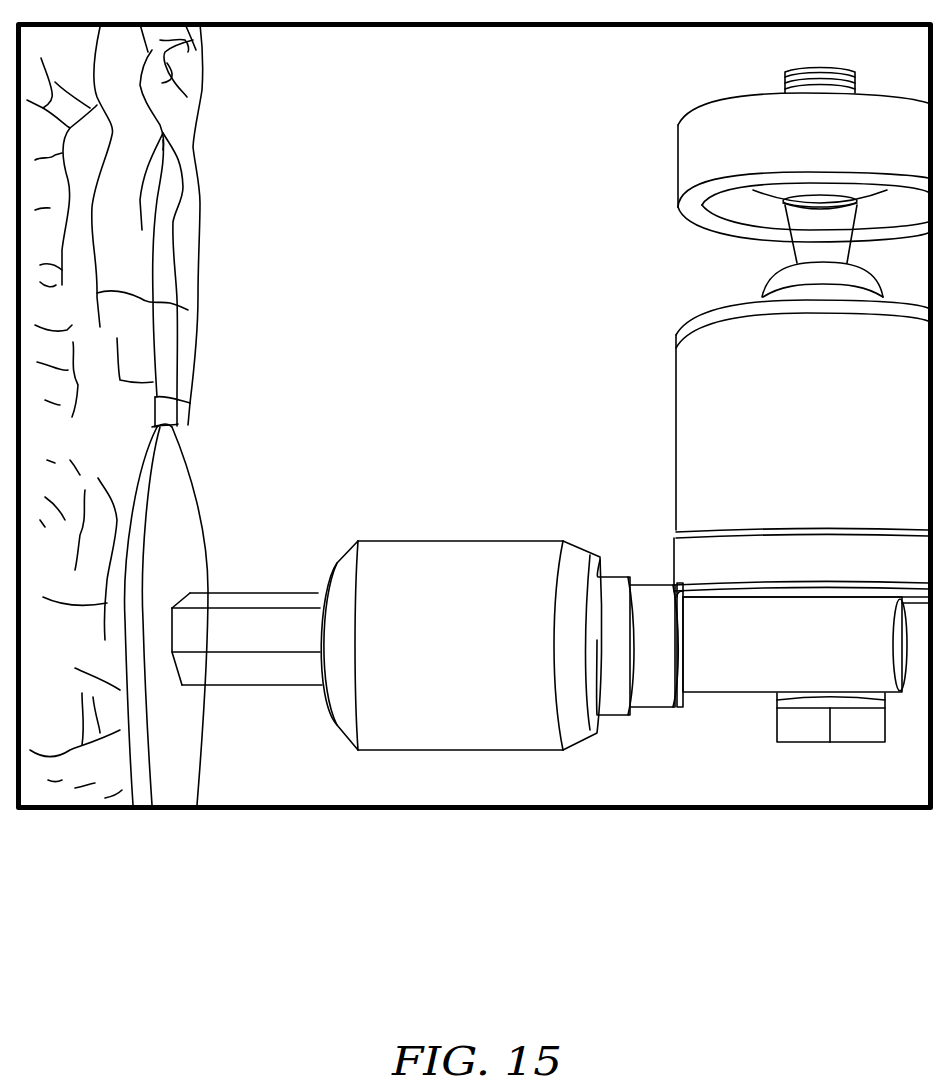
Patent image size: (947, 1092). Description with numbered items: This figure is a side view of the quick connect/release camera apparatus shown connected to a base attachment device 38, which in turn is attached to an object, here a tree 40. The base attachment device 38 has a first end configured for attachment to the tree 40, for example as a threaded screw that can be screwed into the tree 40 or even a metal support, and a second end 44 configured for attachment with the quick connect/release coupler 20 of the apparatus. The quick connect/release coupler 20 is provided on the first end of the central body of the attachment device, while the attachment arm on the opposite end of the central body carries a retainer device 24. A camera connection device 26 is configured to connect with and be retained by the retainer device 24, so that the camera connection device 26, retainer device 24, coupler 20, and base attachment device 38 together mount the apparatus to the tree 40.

The quick connect/release coupler 20 is at (402, 716).
The retainer device 24 is at (727, 681).
The camera connection device 26 is at (688, 412).
The base attachment device 38 is at (195, 690).
The tree 40 is at (92, 792).
The second end 44 is at (277, 670).